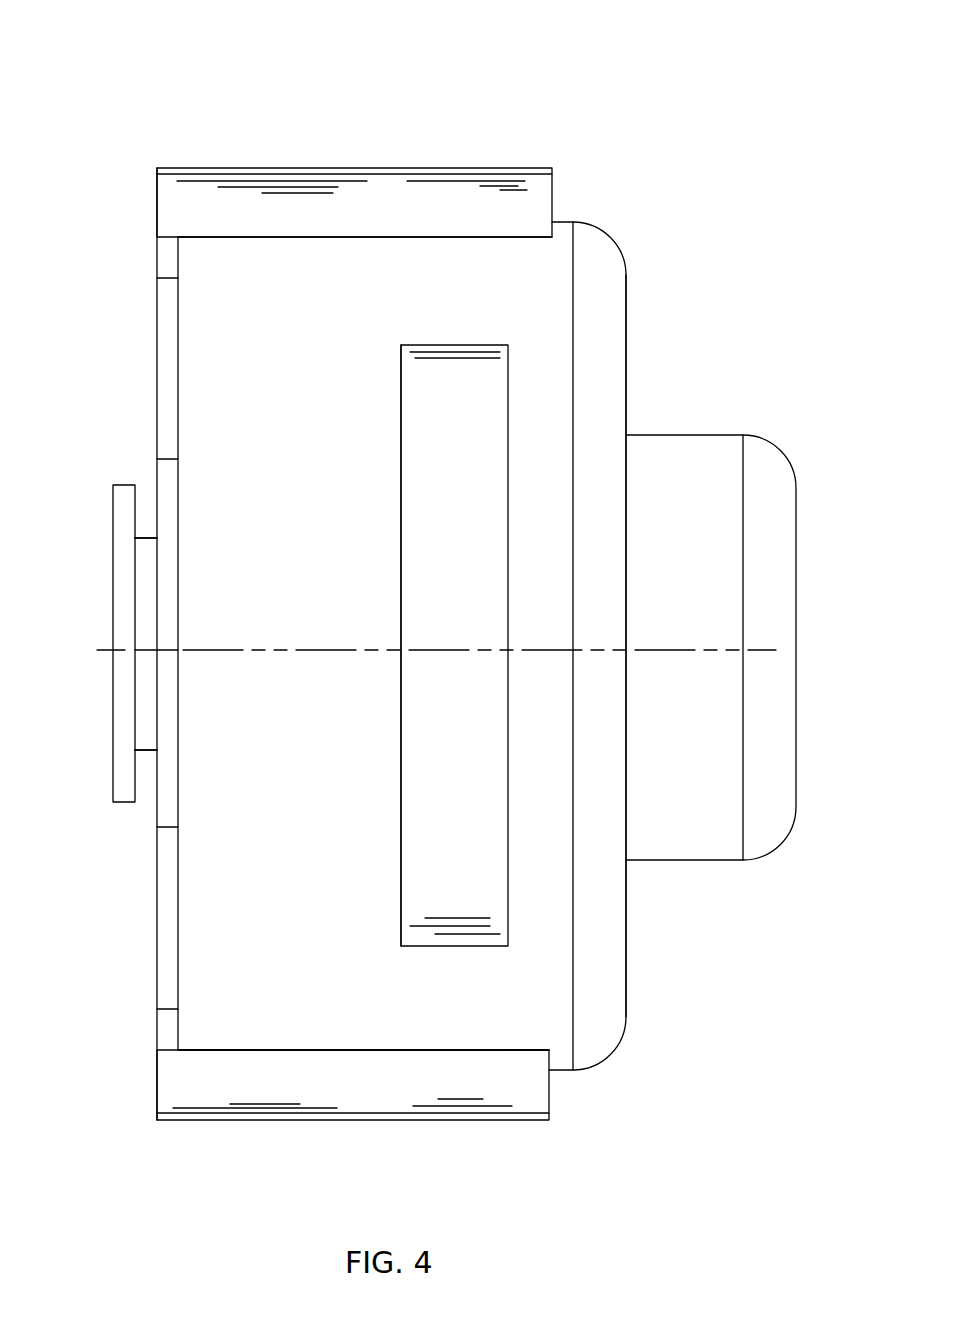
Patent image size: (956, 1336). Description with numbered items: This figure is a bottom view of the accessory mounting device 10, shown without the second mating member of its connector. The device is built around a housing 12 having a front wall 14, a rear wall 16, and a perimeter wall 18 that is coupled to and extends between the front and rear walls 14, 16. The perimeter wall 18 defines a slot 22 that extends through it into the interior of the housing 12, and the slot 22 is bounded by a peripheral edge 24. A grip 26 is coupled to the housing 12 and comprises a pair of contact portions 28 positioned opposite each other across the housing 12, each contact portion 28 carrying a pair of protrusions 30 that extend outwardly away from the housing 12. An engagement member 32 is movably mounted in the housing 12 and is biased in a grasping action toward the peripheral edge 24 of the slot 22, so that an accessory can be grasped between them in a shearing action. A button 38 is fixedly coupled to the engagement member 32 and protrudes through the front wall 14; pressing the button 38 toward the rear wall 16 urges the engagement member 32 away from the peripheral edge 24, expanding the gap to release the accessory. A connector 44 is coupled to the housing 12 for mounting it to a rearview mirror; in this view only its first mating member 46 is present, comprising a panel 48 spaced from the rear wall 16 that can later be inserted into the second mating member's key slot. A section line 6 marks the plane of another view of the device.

The accessory mounting device 10 is at (583, 97).
The housing 12 is at (642, 212).
The front wall 14 is at (627, 366).
The rear wall 16 is at (180, 382).
The perimeter wall 18 is at (235, 979).
The slot 22 is at (490, 855).
The peripheral edge 24 is at (399, 900).
The grip 26 is at (112, 222).
The contact portions 28 is at (200, 135).
The protrusions 30 is at (283, 195).
The engagement member 32 is at (475, 518).
The button 38 is at (758, 532).
The connector 44 is at (52, 720).
The first mating member 46 is at (120, 838).
The panel 48 is at (117, 737).
The section line 6- 6 is at (97, 650).